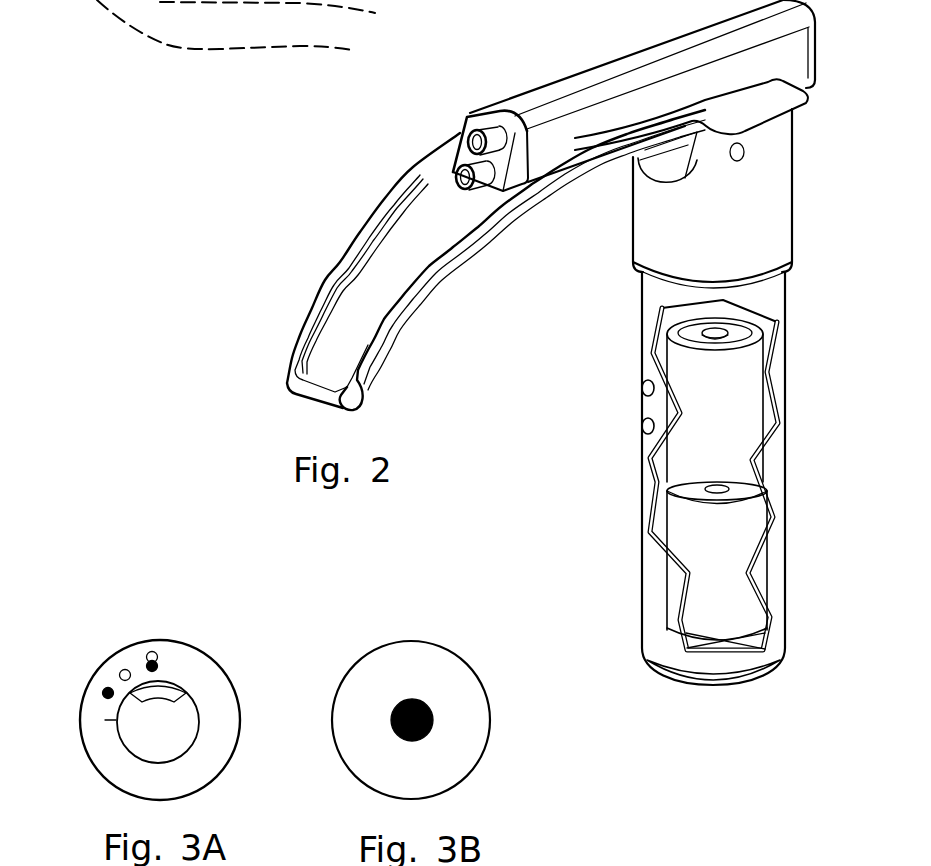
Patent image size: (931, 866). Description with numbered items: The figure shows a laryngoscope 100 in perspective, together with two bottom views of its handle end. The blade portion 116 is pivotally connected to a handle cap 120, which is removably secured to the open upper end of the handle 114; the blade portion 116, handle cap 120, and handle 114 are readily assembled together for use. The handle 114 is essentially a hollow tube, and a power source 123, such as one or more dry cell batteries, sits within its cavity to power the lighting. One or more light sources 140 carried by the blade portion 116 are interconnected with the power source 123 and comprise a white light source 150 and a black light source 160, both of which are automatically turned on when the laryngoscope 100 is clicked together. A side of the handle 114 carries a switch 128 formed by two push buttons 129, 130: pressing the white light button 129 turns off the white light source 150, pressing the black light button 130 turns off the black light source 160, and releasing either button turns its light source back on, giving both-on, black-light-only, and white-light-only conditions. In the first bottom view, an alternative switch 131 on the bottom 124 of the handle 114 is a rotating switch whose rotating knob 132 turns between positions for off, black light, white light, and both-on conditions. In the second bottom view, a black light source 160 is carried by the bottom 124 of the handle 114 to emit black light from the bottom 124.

In FIG. 2, the laryngoscope 100 is at (574, 500).
In FIG. 2, the handle 114 is at (790, 505).
In FIG. 2, the blade portion 116 is at (455, 288).
In FIG. 2, the handle cap 120 is at (801, 178).
In FIG. 2, the power source 123 is at (693, 521).
In FIG. 2, the bottom of the handle 124 is at (733, 688).
In FIG. 3A, the bottom of the handle 124 is at (98, 634).
In FIG. 2, the switch 128 is at (622, 393).
In FIG. 2, the white light button 129 is at (642, 389).
In FIG. 2, the black light button 130 is at (642, 429).
In FIG. 3A, the switch 131 is at (125, 772).
In FIG. 3A, the rotating knob 132 is at (193, 749).
In FIG. 2, the light sources 140 is at (462, 107).
In FIG. 2, the white light source 150 is at (468, 142).
In FIG. 2, the black light source 160 is at (478, 180).
In FIG. 3B, the black light source 160 is at (431, 734).